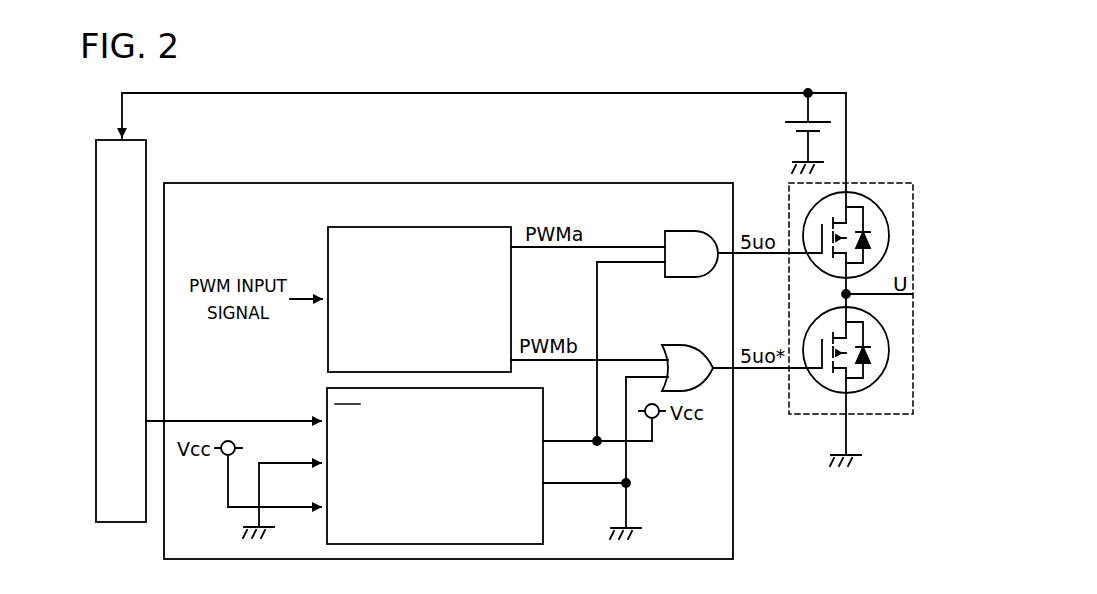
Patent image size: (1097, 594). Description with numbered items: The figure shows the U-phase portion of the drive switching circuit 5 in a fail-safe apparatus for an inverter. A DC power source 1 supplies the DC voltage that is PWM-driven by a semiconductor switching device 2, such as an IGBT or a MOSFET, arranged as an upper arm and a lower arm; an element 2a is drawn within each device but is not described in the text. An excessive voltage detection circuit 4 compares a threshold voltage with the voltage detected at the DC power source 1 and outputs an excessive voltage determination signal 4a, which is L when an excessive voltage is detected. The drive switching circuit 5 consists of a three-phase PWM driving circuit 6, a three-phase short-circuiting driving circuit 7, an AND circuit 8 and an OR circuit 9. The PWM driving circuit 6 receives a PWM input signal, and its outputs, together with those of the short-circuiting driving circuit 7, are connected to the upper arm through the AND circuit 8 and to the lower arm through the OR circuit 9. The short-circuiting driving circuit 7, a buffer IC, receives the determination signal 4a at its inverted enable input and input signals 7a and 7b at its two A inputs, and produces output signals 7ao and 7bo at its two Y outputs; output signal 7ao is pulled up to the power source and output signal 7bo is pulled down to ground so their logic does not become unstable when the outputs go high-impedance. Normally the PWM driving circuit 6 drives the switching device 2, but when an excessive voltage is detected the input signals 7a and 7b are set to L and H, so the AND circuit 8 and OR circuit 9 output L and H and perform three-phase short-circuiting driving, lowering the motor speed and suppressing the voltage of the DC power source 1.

The DC power source 1 is at (788, 128).
The semiconductor switching device 2 is at (866, 196).
The body diode of switching element 2a is at (870, 240).
The excessive voltage detection circuit 4 is at (96, 312).
The excessive voltage determination signal 4a is at (233, 408).
The drive switching circuit 5 is at (198, 183).
The three-phase PWM driving circuit 6 is at (328, 247).
The three-phase short-circuiting driving circuit 7 is at (327, 400).
The input signal 7a is at (290, 481).
The input signal 7b is at (274, 494).
The output signal 7ao is at (604, 353).
The output signal 7bo is at (605, 452).
The AND circuit 8 is at (672, 231).
The OR circuit 9 is at (672, 345).